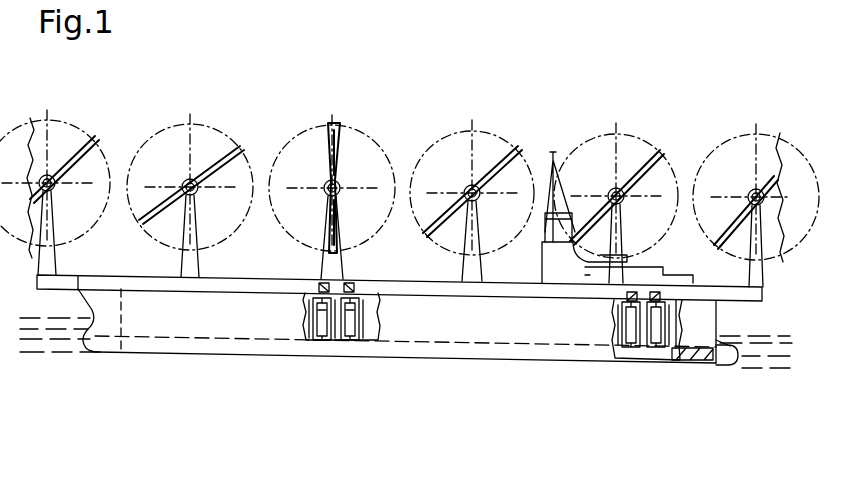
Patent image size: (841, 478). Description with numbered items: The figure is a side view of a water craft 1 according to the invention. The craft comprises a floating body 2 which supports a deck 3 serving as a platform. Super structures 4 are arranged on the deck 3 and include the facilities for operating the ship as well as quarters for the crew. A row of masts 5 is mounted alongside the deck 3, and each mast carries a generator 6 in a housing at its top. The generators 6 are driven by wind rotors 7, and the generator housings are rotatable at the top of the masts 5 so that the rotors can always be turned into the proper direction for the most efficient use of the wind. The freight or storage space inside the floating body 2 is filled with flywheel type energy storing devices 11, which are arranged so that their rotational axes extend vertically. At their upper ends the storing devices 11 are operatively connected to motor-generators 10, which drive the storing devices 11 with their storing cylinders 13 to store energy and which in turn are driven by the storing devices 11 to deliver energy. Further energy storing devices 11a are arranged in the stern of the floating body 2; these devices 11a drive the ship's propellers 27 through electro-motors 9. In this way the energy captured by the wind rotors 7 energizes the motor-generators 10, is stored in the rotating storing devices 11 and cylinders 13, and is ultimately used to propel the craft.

The water craft 1 is at (407, 118).
The floating body 2 is at (517, 333).
The deck 3 is at (244, 283).
The super structures 4 is at (566, 246).
The masts 5 is at (186, 255).
The generators 6 is at (184, 182).
The wind rotors 7 is at (222, 157).
The electro-motors 9 is at (679, 362).
The motor-generators 10 is at (317, 288).
The flywheel type energy storing devices 11 is at (347, 340).
The further energy storing devices 11a is at (657, 348).
The storing cylinders 13 is at (320, 340).
The propellers 27 is at (717, 347).